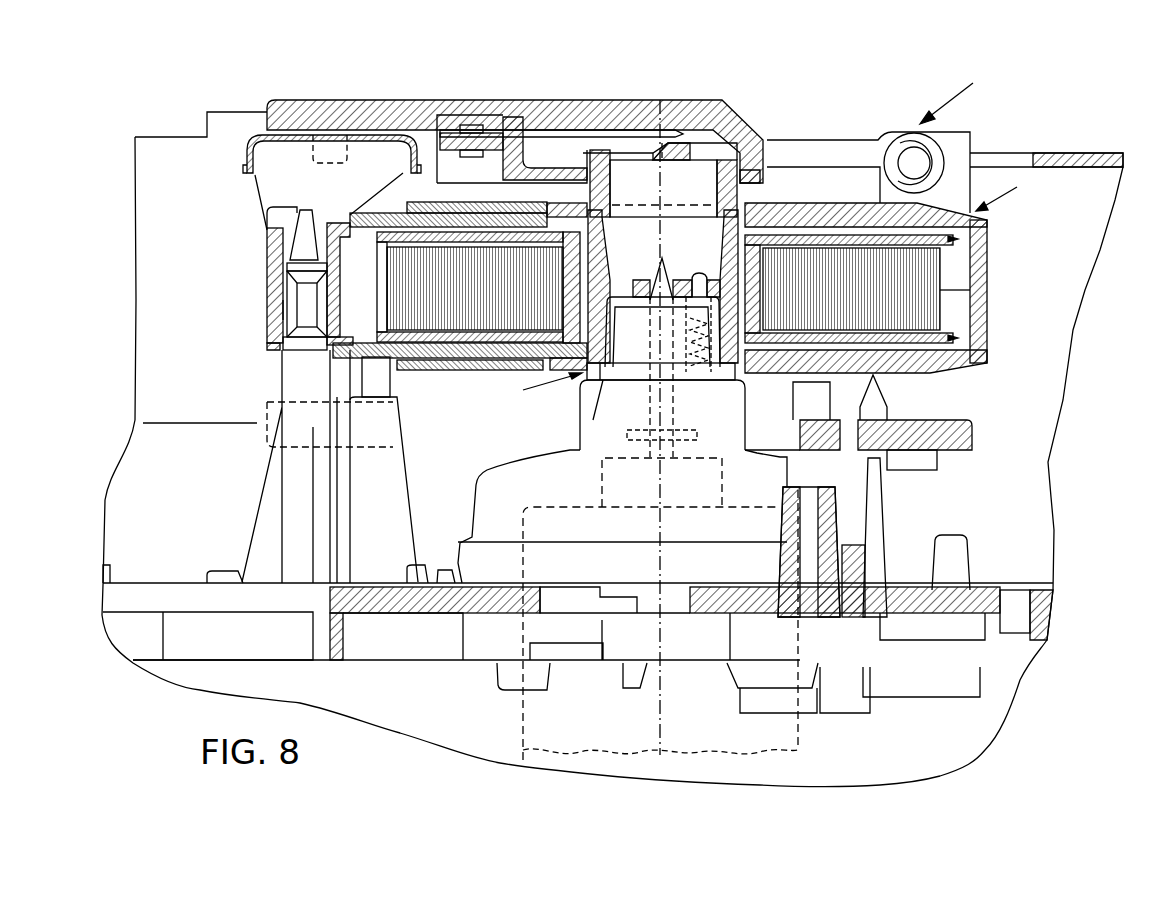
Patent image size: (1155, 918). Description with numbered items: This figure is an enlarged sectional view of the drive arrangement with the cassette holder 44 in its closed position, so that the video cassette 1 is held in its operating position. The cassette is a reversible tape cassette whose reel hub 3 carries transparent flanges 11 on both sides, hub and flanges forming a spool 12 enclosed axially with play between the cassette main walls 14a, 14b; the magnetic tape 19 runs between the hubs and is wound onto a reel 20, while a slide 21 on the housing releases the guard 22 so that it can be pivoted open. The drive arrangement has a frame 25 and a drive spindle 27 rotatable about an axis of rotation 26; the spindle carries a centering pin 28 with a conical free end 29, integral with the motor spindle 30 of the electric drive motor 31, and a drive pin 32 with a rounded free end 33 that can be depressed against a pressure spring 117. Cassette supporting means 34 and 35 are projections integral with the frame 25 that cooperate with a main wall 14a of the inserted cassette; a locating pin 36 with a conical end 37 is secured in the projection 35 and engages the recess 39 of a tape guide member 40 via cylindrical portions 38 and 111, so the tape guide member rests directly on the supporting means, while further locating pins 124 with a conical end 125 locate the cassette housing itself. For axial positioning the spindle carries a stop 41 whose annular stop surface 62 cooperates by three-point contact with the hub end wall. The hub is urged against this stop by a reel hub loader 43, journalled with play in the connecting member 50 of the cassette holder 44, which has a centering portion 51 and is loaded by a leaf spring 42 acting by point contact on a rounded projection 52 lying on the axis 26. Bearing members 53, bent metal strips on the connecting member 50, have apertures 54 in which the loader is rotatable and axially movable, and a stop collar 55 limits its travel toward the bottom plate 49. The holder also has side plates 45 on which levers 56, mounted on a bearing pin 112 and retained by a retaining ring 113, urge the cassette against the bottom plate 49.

The video cassette 1 is at (1019, 193).
The reel hub 3 is at (753, 213).
The transparent flange 11 is at (922, 240).
The spool 12 is at (988, 238).
The lower housing plate 14a is at (930, 364).
The upper housing plate 14b is at (822, 210).
The magnetic tape 19 is at (273, 290).
The reel 20 is at (930, 290).
The slide 21 is at (433, 365).
The guard 22 is at (270, 155).
The frame 25 is at (390, 650).
The axis of rotation 26 is at (662, 520).
The drive spindle 27 is at (486, 395).
The centering pin 28 is at (670, 283).
The conical free end 29 is at (660, 272).
The motor spindle 30 is at (658, 407).
The electric drive motor 31 is at (537, 713).
The drive pin 32 is at (700, 290).
The rounded free end 33 is at (700, 277).
The cassette supporting means 34 is at (875, 403).
The cassette supporting means 35 is at (300, 378).
The locating pin 36 is at (312, 305).
The conical end 37 is at (300, 242).
The cylindrical portion 38 is at (290, 268).
The recess 39 is at (295, 207).
The tape guide member 40 is at (280, 310).
The stop 41 is at (597, 378).
The leaf spring 42 is at (602, 130).
The reel hub loader 43 is at (697, 170).
The cassette holder 44 is at (982, 88).
The side plate 45 is at (160, 150).
The bottom plate 49 is at (953, 447).
The connecting member 50 is at (370, 100).
The centering portion 51 is at (631, 217).
The rounded projection 52 is at (668, 147).
The bearing member 53 is at (504, 147).
The aperture 54 is at (567, 170).
The stop collar 55 is at (742, 165).
The lever 56 is at (857, 177).
The annular stop surface 62 is at (627, 352).
The cylindrical portion 111 is at (297, 348).
The bearing pin 112 is at (917, 160).
The retaining ring 113 is at (933, 167).
The pressure spring 117 is at (703, 353).
The locating pin 124 is at (377, 387).
The conical end 125 is at (342, 358).